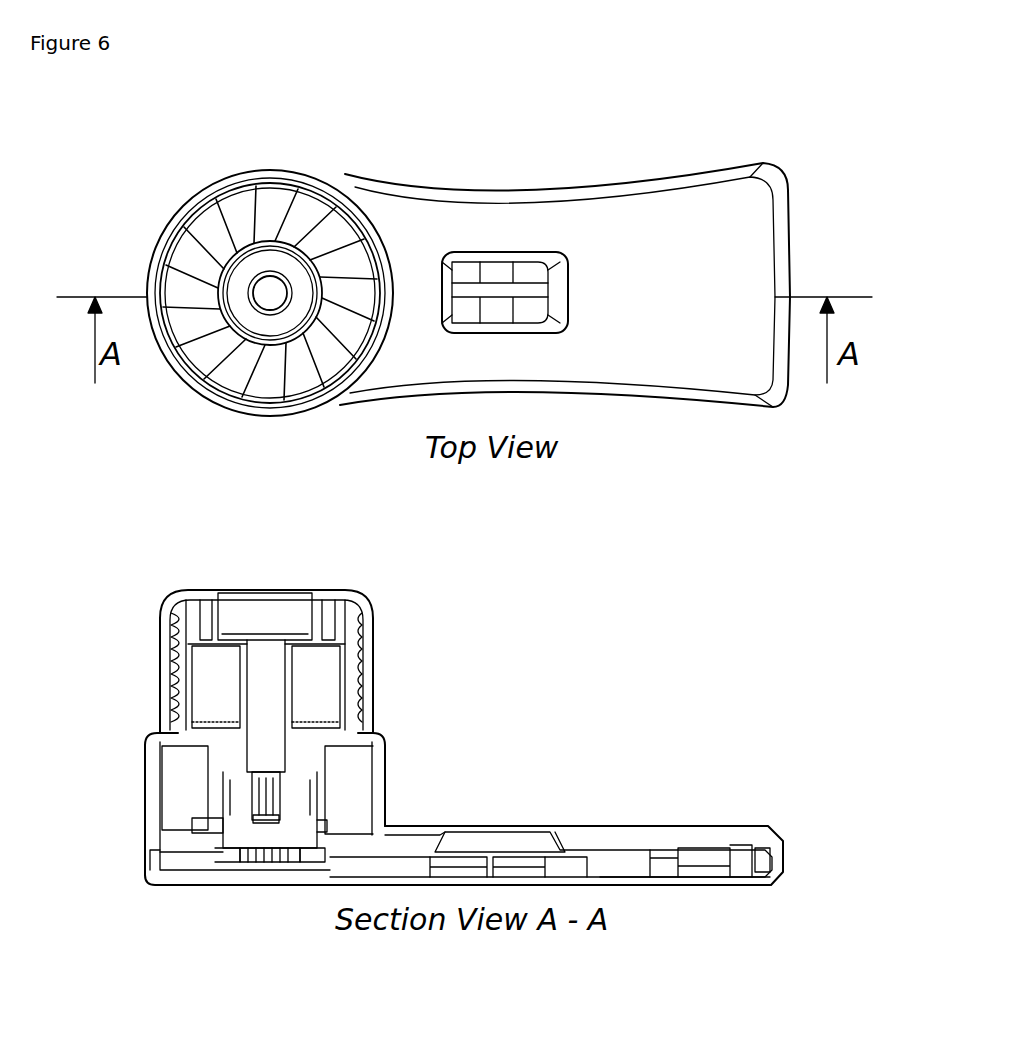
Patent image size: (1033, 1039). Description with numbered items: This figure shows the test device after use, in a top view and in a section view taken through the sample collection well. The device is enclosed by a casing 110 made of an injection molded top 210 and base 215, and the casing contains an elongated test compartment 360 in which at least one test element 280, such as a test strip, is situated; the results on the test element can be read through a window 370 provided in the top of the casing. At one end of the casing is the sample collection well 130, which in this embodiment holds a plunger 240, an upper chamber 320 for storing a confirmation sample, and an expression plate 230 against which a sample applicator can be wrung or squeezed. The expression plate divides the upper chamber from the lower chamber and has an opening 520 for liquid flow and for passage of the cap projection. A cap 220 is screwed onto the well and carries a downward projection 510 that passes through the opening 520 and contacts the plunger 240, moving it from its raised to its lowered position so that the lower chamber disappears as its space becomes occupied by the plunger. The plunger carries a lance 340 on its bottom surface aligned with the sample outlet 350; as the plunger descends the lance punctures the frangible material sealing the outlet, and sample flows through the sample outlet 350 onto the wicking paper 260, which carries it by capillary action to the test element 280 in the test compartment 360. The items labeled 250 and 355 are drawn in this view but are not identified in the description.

The casing 110 is at (750, 230).
The sample collection well 130 is at (398, 652).
The top 210 is at (754, 836).
The base 215 is at (705, 890).
The cap 220 is at (207, 362).
The expression plate 230 is at (328, 733).
The plunger 240 is at (237, 808).
The latch 250 is at (213, 832).
The wicking paper 260 is at (277, 862).
The test element 280 is at (570, 857).
The upper chamber 320 is at (300, 792).
The lance 340 is at (268, 862).
The sample outlet 350 is at (250, 862).
The retainer lip 355 is at (218, 848).
The test compartment 360 is at (358, 821).
The window 370 is at (532, 267).
The projection 510 is at (245, 700).
The opening 520 is at (178, 731).